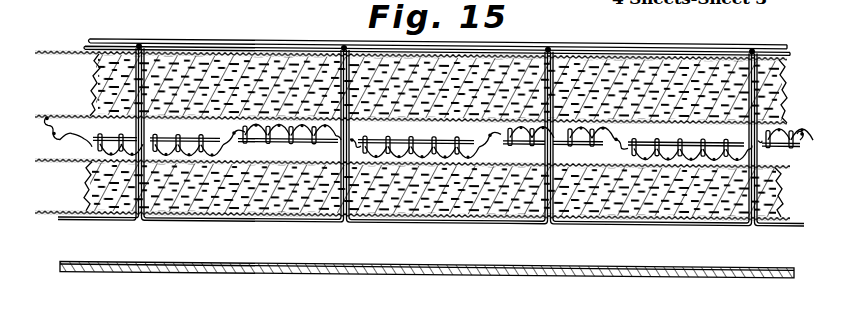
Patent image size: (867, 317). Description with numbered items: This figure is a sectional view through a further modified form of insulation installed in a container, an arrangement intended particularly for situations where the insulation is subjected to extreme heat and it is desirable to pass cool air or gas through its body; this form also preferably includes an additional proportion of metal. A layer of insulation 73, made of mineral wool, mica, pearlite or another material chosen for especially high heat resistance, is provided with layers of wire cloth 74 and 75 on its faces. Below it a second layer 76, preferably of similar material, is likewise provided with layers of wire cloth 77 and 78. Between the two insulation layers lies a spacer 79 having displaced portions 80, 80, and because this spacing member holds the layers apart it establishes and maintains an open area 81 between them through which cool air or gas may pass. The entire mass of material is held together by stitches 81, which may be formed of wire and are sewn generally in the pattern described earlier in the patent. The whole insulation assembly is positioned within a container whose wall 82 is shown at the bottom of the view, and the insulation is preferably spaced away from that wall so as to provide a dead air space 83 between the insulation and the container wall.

The layer of insulation 73 is at (90, 83).
The layer of wire cloth 74 is at (803, 49).
The layer of wire cloth 75 is at (783, 108).
The second layer 76 is at (86, 184).
The layer of wire cloth 77 is at (776, 187).
The layer of wire cloth 78 is at (792, 223).
The spacer 79 is at (487, 152).
The displaced portions 80 is at (88, 146).
The stitches 81 is at (198, 40).
The wall 82 is at (631, 278).
The dead air space 83 is at (707, 256).